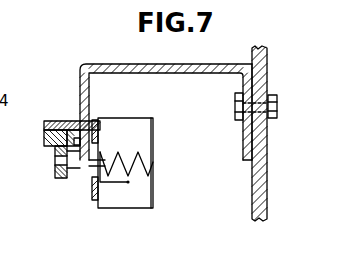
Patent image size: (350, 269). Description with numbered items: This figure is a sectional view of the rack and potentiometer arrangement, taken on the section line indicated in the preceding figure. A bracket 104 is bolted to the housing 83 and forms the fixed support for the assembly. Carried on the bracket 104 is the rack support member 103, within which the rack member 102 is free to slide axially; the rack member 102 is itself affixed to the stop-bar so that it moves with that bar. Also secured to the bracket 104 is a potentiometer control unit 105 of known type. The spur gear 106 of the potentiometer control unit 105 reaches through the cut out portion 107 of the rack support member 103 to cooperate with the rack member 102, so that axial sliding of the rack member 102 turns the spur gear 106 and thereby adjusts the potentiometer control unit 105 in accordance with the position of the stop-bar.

The housing 83 is at (257, 172).
The bracket 104 is at (96, 66).
The rack support member 103 is at (47, 134).
The cut out portion 107 is at (53, 143).
The rack member 102 is at (53, 148).
The spur gear 106 is at (58, 167).
The potentiometer control unit 105 is at (113, 200).